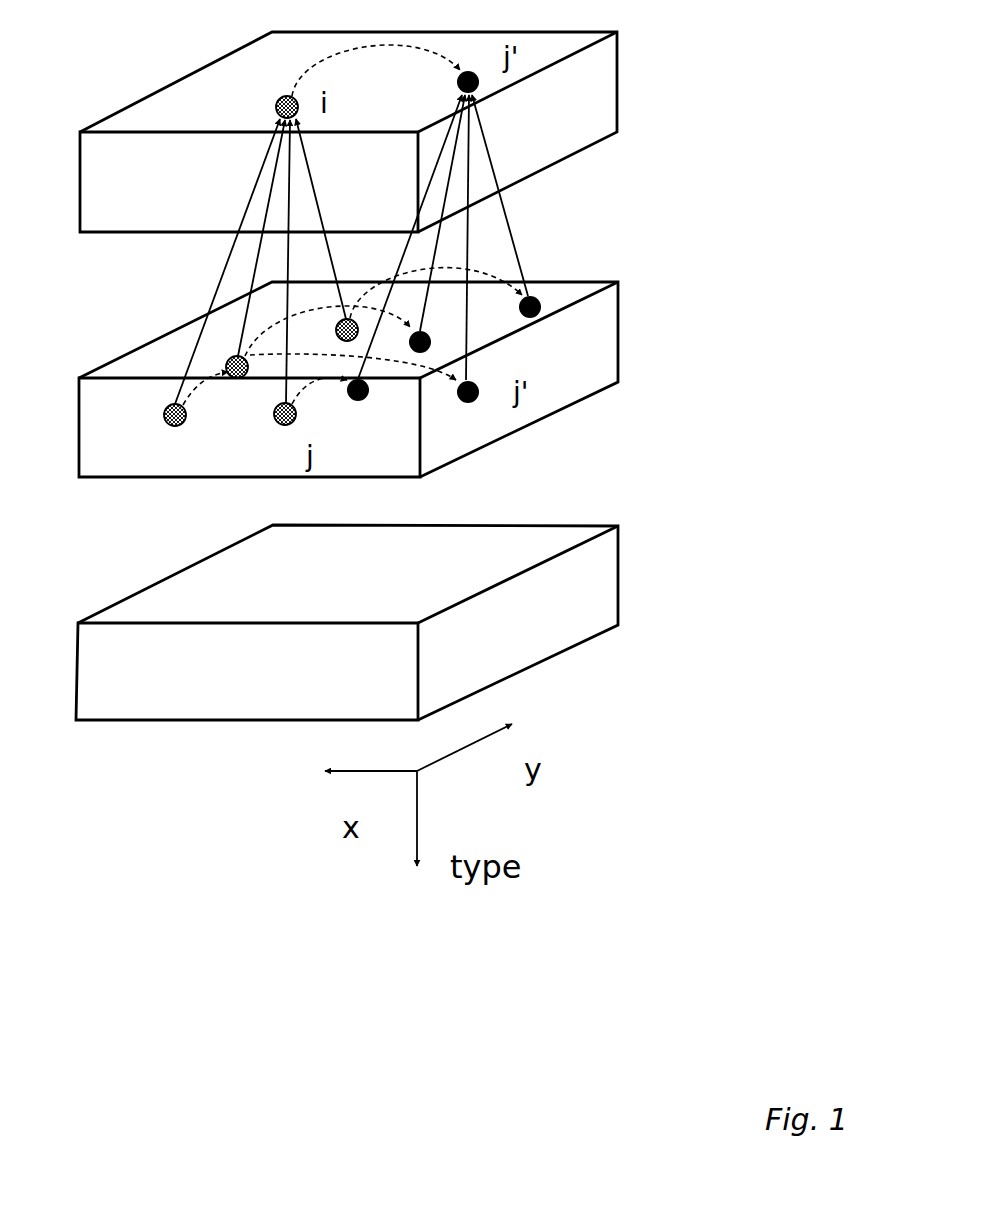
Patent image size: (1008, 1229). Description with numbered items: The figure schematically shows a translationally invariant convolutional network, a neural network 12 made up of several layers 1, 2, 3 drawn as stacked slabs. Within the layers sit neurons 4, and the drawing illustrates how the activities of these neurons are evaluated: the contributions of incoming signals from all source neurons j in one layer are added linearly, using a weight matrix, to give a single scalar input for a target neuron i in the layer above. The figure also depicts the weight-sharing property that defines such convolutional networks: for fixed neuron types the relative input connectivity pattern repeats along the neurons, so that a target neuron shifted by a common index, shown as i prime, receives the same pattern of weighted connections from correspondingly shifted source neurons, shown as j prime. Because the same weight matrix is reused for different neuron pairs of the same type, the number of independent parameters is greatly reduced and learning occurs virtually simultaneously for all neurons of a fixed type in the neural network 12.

The layer 1 is at (622, 573).
The layer 2 is at (620, 331).
The layer 3 is at (622, 81).
The neuron 4 is at (472, 403).
The neural network 12 is at (760, 0).